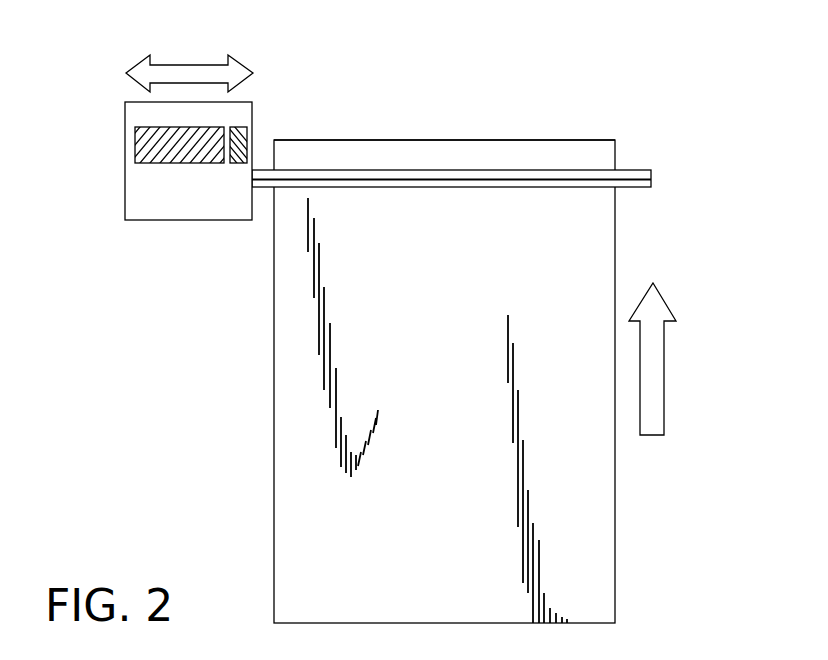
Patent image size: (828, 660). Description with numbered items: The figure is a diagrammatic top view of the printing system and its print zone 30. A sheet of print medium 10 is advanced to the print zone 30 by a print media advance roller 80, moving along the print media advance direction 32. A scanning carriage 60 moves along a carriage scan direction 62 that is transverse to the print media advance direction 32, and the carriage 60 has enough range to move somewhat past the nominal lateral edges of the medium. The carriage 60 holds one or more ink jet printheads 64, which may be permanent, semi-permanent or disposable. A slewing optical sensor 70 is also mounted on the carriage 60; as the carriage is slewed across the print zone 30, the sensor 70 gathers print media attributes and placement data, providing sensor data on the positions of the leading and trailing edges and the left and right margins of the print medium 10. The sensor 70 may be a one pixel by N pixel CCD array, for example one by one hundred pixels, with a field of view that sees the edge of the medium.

The print medium 10 is at (295, 487).
The print zone 30 is at (476, 124).
The print media advance direction 32 is at (657, 353).
The carriage 60 is at (126, 194).
The carriage scan direction 62 is at (165, 75).
The ink jet printheads 64 is at (145, 138).
The slewing optical sensor 70 is at (253, 122).
The print media advance roller 80 is at (652, 179).